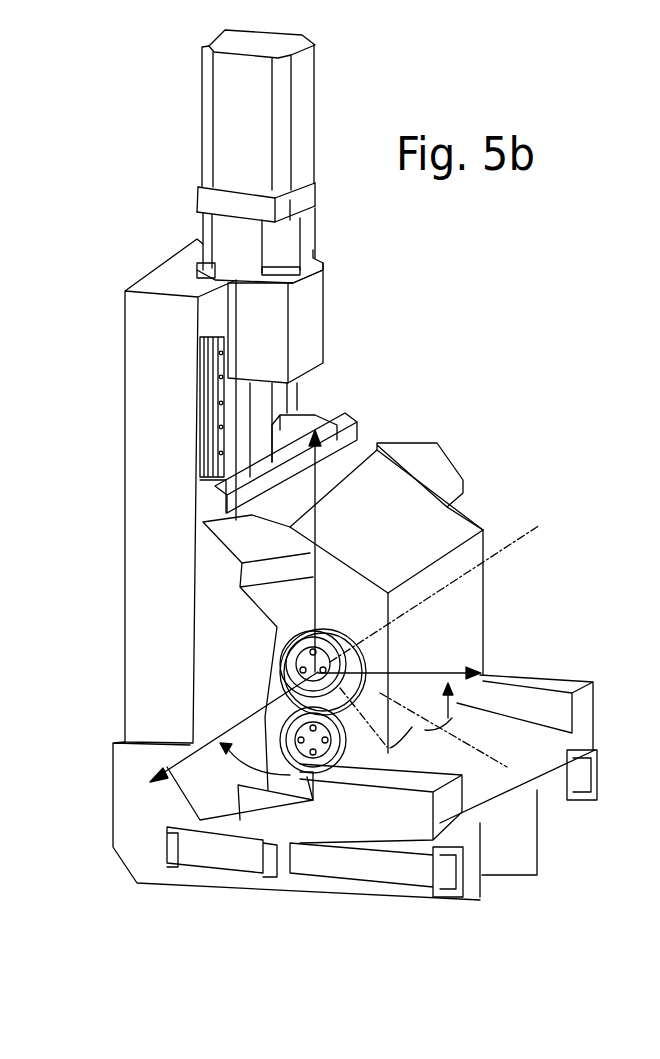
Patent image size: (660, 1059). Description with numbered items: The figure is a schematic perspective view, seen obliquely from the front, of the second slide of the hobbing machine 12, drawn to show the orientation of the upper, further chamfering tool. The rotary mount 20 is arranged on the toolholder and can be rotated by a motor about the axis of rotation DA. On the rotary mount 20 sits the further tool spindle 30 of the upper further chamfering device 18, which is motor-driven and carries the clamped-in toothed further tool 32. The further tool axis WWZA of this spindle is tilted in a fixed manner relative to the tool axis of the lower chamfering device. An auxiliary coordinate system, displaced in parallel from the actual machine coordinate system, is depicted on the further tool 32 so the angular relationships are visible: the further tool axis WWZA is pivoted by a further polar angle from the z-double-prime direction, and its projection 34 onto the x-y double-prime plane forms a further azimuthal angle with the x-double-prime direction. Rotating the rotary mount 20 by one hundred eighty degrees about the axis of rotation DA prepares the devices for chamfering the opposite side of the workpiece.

The machine tool 12 is at (418, 388).
The rotary mount 20 is at (200, 587).
The further chamfering device 18 is at (381, 608).
The further tool spindle 30 is at (365, 632).
The further tool 32 is at (278, 672).
The projection of the further tool axis 34 is at (480, 748).
The axis of rotation DA is at (516, 524).
The further tool axis WWZA is at (494, 837).